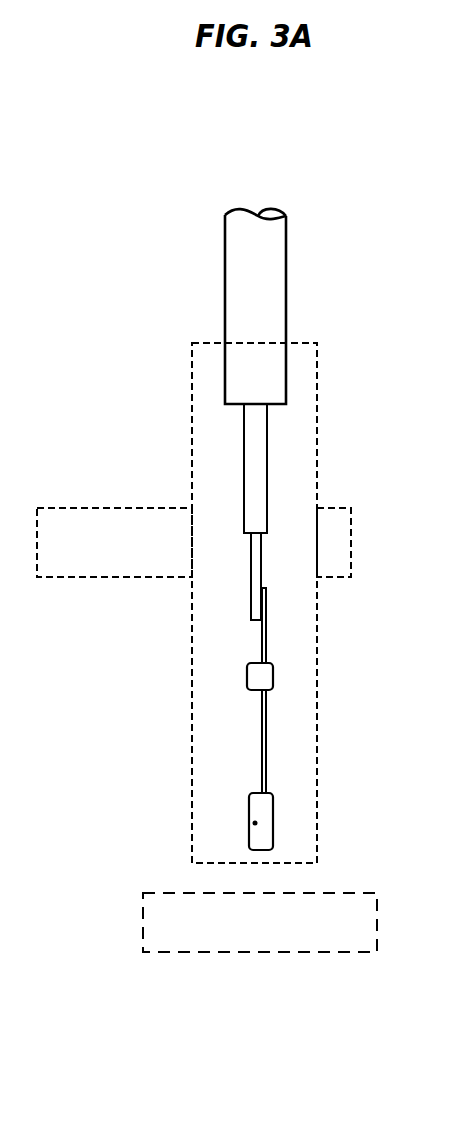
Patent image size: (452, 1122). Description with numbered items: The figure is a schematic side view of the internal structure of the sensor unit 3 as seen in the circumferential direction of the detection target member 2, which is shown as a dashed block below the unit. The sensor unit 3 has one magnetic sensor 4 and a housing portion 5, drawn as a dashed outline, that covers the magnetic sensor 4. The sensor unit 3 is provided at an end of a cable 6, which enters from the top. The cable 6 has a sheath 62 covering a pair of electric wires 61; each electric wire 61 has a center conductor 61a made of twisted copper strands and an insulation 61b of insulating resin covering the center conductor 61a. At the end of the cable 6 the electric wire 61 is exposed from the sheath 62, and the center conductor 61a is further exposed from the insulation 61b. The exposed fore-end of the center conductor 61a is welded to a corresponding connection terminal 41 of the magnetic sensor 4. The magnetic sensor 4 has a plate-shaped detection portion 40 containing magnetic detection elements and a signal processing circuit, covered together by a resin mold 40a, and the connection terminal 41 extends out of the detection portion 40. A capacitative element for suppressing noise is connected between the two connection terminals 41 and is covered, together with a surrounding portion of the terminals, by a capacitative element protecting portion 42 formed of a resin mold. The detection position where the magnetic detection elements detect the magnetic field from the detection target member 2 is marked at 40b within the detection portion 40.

The detection target member 2 is at (143, 893).
The sensor unit 3 is at (180, 268).
The magnetic sensor 4 is at (285, 788).
The housing portion 5 is at (317, 343).
The cable 6 is at (279, 305).
The detection portion 40 is at (250, 805).
The resin mold 40a is at (268, 805).
The detection position 40b is at (257, 824).
The connection terminal 41 is at (259, 729).
The capacitative element protecting portion 42 is at (256, 675).
The electric wire 61 is at (337, 512).
The center conductor 61a is at (257, 555).
The insulation 61b is at (263, 466).
The sheath 62 is at (279, 280).